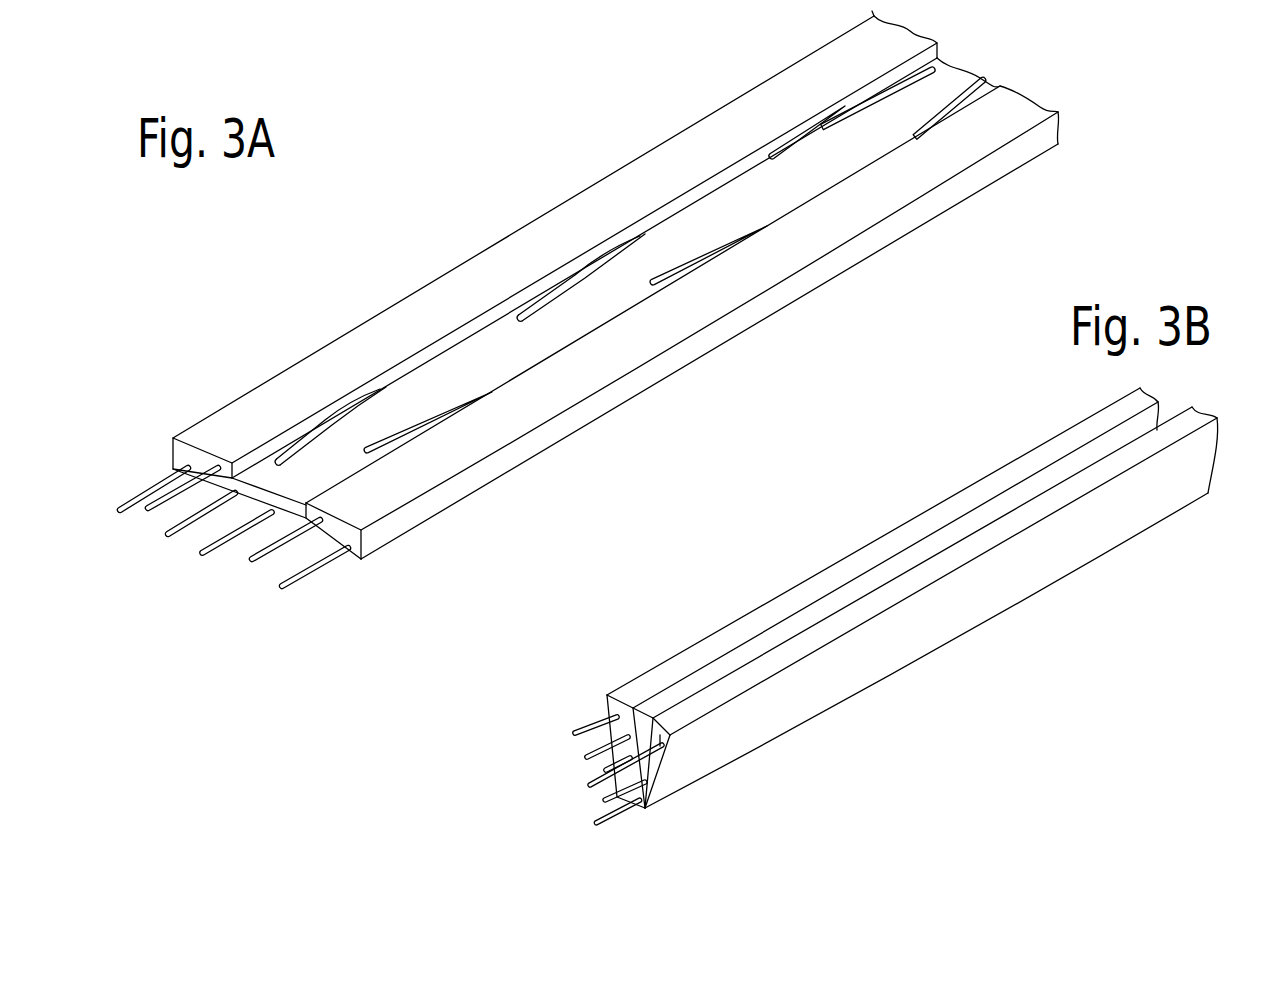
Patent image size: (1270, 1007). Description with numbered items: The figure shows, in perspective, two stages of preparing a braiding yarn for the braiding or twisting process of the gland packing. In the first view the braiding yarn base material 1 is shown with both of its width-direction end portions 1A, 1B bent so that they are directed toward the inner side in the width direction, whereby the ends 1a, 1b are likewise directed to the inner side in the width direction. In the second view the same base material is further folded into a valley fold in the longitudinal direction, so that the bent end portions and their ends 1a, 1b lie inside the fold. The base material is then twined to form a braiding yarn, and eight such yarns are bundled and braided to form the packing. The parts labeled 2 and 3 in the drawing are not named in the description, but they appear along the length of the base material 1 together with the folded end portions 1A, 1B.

In FIG. 3A, the optical fiber holding substrate 1 is at (736, 326).
In FIG. 3B, the optical fiber holding substrate 1 is at (925, 640).
In FIG. 3A, the end portion of the braiding yarn base material 1A is at (476, 278).
In FIG. 3A, the end portion of the braiding yarn base material 1B is at (587, 383).
In FIG. 3A, the end of the braiding yarn base material 1a is at (238, 462).
In FIG. 3B, the end of the braiding yarn base material 1a is at (622, 765).
In FIG. 3A, the end of the braiding yarn base material 1b is at (306, 503).
In FIG. 3B, the end of the braiding yarn base material 1b is at (645, 760).
In FIG. 3A, the optical fibers 2 is at (325, 427).
In FIG. 3B, the optical fibers 2 is at (607, 817).
In FIG. 3B, the bonding boundary line 3 is at (857, 699).